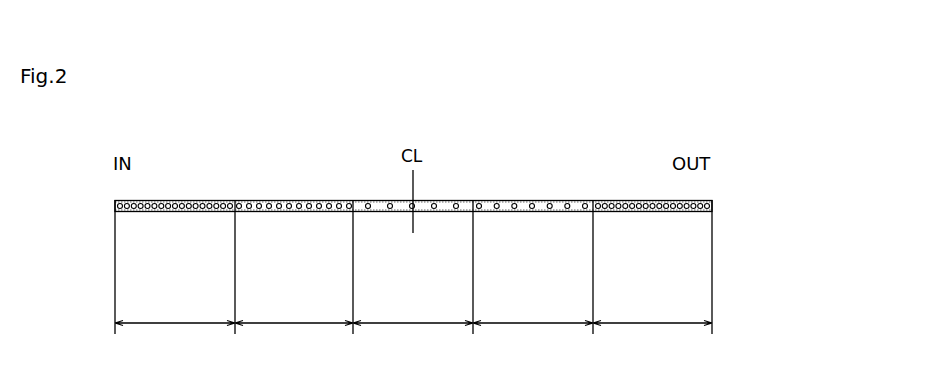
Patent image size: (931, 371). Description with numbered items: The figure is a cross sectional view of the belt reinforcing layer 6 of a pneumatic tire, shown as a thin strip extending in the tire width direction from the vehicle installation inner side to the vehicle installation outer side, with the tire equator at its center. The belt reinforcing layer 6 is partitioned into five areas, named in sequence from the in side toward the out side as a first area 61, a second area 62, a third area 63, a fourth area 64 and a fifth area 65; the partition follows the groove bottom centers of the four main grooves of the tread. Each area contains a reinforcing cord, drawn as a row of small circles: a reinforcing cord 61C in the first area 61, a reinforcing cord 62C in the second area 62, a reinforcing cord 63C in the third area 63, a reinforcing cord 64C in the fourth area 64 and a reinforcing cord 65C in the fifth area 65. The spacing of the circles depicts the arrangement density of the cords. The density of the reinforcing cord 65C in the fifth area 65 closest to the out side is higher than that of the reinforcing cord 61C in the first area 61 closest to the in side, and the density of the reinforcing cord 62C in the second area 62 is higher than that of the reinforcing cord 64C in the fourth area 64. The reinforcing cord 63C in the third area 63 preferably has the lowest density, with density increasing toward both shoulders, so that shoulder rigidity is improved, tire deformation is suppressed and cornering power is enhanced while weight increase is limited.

The belt reinforcing layer 6 is at (588, 185).
The first area 61 is at (175, 267).
The second area 62 is at (294, 267).
The third area 63 is at (413, 267).
The fourth area 64 is at (533, 267).
The fifth area 65 is at (652, 267).
The reinforcing cord 61C is at (216, 210).
The reinforcing cord 62C is at (329, 210).
The reinforcing cord 63C is at (456, 210).
The reinforcing cord 64C is at (567, 210).
The reinforcing cord 65C is at (690, 210).